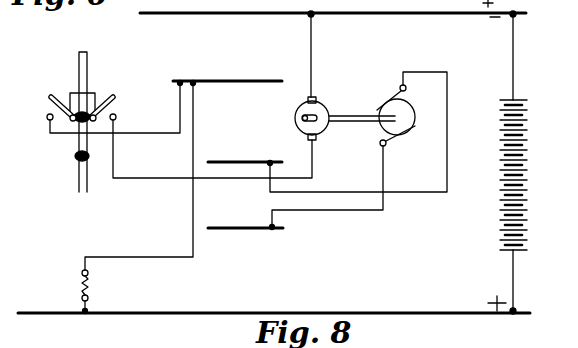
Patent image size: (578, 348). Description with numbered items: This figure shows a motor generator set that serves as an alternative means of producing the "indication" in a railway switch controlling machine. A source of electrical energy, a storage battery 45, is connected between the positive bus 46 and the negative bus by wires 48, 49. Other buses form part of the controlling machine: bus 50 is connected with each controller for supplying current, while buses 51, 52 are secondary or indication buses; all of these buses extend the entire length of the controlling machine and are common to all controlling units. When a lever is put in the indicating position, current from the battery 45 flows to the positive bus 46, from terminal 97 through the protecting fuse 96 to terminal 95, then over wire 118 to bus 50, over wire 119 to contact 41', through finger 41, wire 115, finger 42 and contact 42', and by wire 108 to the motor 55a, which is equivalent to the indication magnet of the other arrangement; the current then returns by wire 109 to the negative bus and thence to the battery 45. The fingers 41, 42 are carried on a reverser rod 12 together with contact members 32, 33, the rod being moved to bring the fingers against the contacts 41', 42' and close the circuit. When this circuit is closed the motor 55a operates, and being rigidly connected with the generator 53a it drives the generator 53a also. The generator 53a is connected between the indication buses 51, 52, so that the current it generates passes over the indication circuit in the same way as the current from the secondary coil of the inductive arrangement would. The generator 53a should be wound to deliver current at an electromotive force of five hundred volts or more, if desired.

The rod 12 is at (88, 187).
The contact member 32 is at (76, 122).
The contact member 33 is at (77, 162).
The finger 41 is at (43, 106).
The contact 41' is at (34, 122).
The finger 42 is at (117, 106).
The contact 42' is at (128, 122).
The storage battery 45 is at (523, 180).
The positive bus 46 is at (493, 315).
The wire 48 is at (515, 278).
The wire 49 is at (514, 44).
The bus 50 is at (215, 80).
The indication bus 51 is at (215, 161).
The indication bus 52 is at (265, 228).
The generator 53a is at (408, 104).
The motor 55a is at (304, 105).
The terminal 95 is at (82, 273).
The protecting fuse 96 is at (88, 286).
The terminal 97 is at (82, 298).
The wire 108 is at (170, 177).
The wire 109 is at (312, 53).
The wire 115 is at (72, 94).
The wire 118 is at (155, 257).
The wire 119 is at (163, 134).